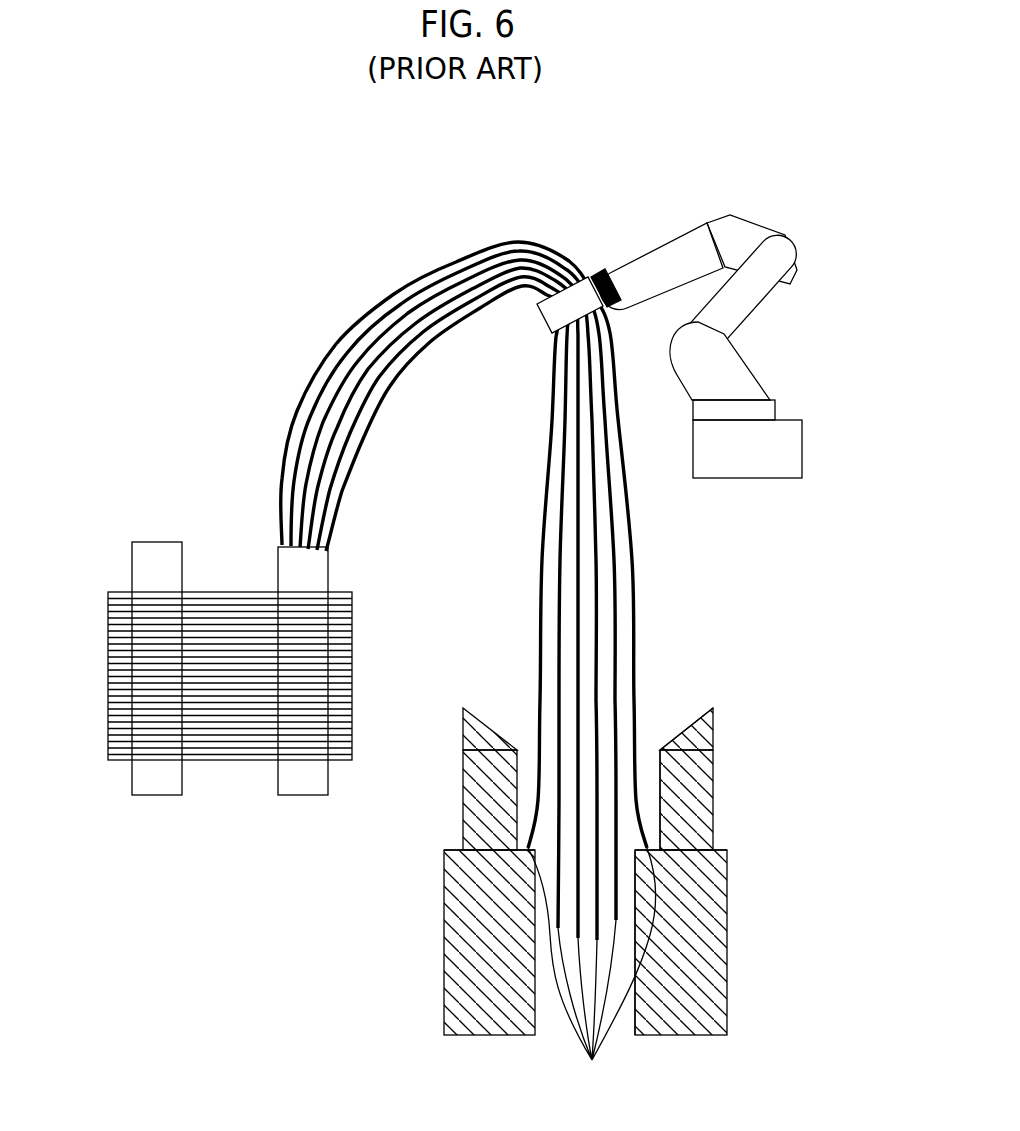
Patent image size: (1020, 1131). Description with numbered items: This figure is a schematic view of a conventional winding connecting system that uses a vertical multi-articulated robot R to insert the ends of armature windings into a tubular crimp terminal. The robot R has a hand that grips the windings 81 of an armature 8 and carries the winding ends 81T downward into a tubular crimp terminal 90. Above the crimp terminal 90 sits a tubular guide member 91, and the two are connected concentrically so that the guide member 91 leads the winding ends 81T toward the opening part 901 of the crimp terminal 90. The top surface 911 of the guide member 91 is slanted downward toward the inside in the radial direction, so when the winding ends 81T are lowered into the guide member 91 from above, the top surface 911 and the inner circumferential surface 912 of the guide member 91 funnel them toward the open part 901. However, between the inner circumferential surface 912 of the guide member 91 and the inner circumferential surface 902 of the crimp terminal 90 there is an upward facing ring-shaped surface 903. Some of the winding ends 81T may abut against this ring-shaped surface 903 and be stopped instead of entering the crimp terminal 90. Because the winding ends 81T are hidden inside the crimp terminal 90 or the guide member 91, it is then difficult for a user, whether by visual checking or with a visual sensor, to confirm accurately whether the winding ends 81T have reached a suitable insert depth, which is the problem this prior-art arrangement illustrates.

The armature 8 is at (106, 524).
The windings 81 is at (458, 300).
The winding ends 81T is at (592, 972).
The robot R is at (801, 214).
The crimp terminal 90 is at (707, 966).
The guide member 91 is at (690, 773).
The opening part 901 is at (546, 838).
The inner circumferential surface 902 is at (643, 997).
The ring-shaped surface 903 is at (645, 828).
The top surface 911 is at (690, 730).
The inner circumferential surface 912 is at (660, 777).